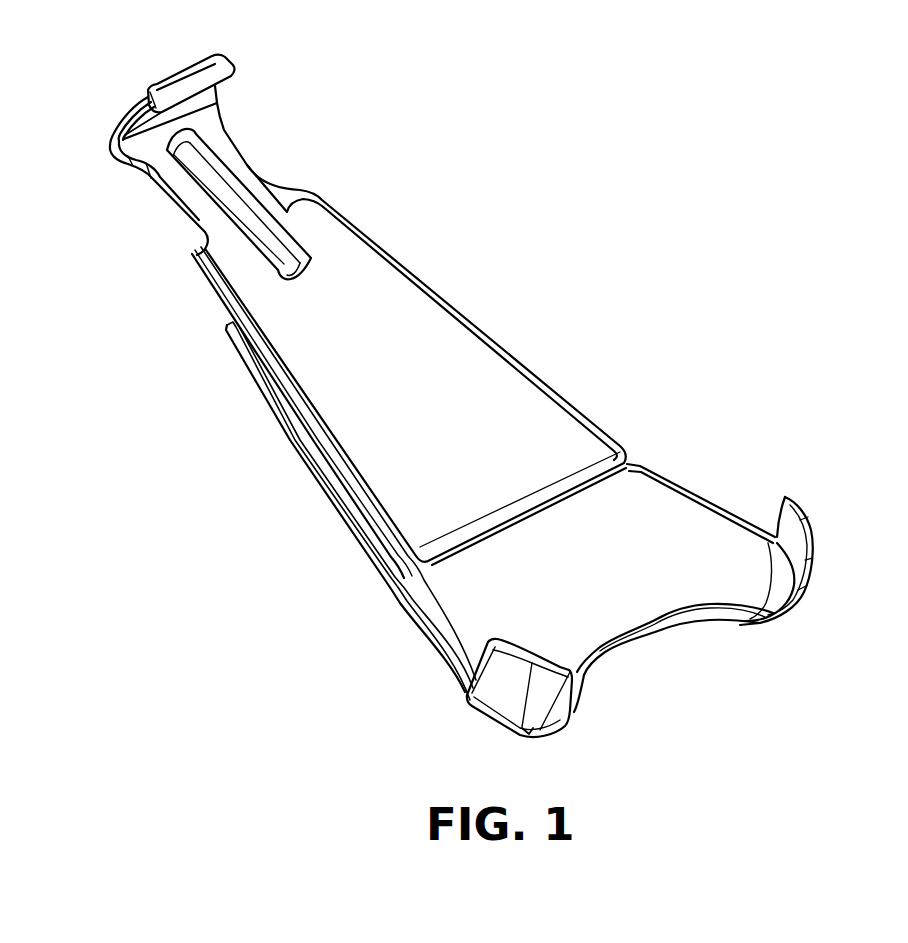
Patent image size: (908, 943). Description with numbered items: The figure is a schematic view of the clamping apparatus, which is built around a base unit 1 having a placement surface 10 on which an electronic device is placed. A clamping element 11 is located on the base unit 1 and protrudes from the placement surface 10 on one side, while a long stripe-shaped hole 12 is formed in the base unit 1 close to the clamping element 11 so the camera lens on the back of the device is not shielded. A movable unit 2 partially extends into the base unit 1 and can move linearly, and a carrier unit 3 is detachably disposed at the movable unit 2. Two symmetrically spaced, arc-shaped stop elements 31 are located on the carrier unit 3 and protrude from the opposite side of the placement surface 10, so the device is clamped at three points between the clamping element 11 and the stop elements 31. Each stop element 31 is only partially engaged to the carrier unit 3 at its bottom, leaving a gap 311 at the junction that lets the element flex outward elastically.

The base unit 1 is at (268, 388).
The placement surface 10 is at (400, 353).
The clamping element 11 is at (182, 107).
The hole 12 is at (233, 204).
The movable unit 2 is at (403, 610).
The carrier unit 3 is at (663, 530).
The stop element 31 is at (787, 537).
The gap 311 is at (492, 718).